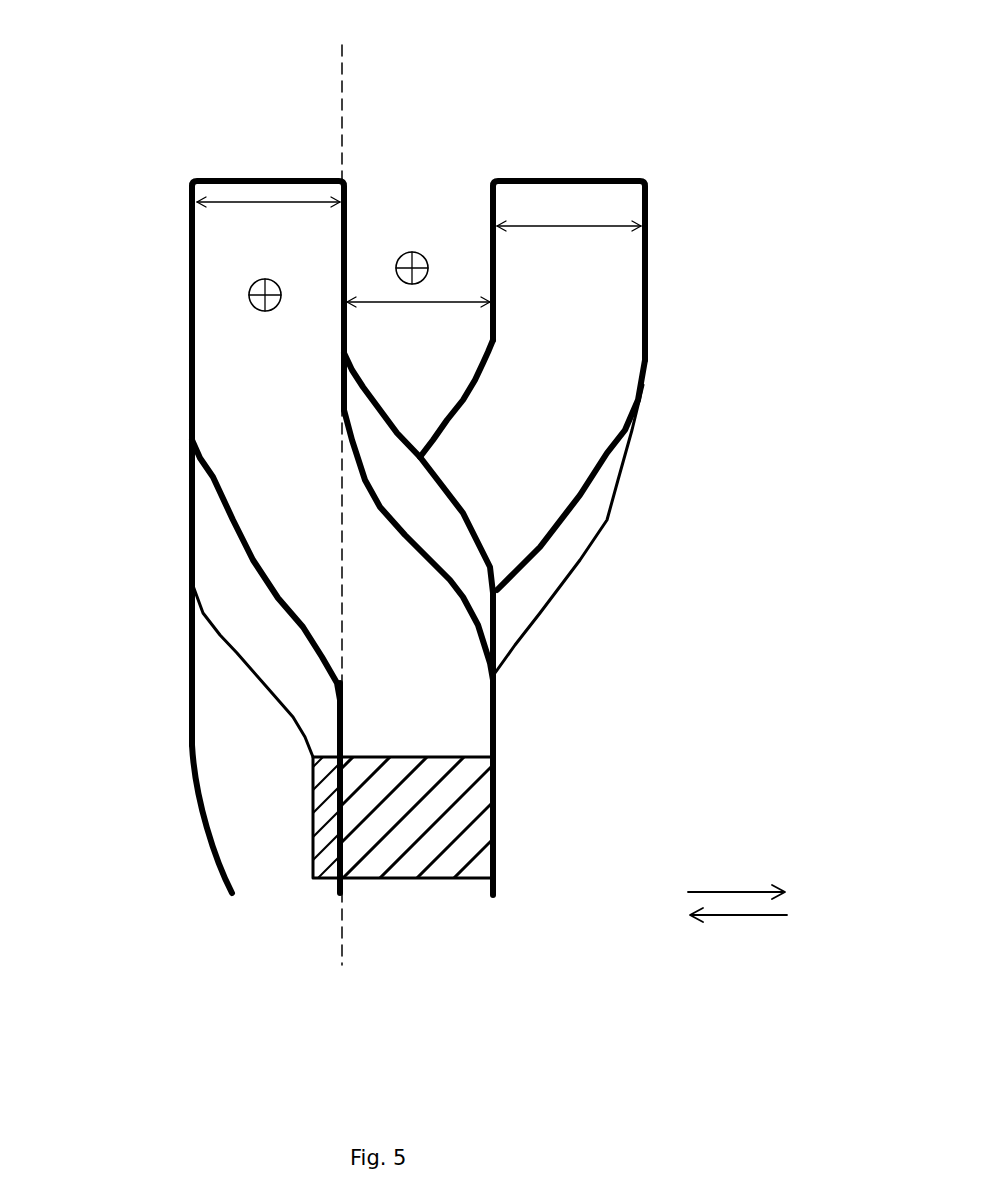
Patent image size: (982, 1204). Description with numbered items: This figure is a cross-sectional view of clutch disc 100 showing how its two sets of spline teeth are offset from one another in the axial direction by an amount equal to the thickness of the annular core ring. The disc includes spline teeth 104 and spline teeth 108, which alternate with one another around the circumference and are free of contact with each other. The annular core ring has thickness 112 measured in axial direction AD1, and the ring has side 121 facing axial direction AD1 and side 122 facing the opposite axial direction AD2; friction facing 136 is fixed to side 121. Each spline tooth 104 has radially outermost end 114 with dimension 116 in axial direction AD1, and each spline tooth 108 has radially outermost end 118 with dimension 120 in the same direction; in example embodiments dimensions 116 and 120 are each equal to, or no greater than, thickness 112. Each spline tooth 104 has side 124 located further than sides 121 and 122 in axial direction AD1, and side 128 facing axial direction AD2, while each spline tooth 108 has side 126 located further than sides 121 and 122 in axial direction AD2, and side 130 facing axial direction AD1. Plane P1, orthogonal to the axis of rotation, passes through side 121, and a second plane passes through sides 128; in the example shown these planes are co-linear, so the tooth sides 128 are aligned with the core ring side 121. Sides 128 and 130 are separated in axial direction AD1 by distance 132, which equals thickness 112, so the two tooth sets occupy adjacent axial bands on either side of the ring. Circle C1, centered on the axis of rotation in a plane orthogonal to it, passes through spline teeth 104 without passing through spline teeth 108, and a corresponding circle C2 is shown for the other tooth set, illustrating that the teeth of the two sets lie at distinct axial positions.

The clutch disc 100 is at (729, 100).
The spline teeth 104 is at (186, 264).
The spline teeth 108 is at (652, 232).
The thickness 112 is at (499, 818).
The radially outermost end 114 is at (214, 178).
The dimension 116 is at (266, 200).
The radially outermost end 118 is at (605, 178).
The dimension 120 is at (545, 224).
The side 121 is at (311, 837).
The side 122 is at (495, 863).
The side 124 is at (192, 283).
The side 126 is at (648, 258).
The side 128 is at (347, 245).
The side 130 is at (491, 258).
The distance 132 is at (412, 304).
The friction facing 136 is at (335, 817).
The circle C1 is at (249, 303).
The second center C2 is at (412, 252).
The plane P1 is at (344, 130).
The axial direction AD1 is at (743, 918).
The axial direction AD2 is at (743, 889).